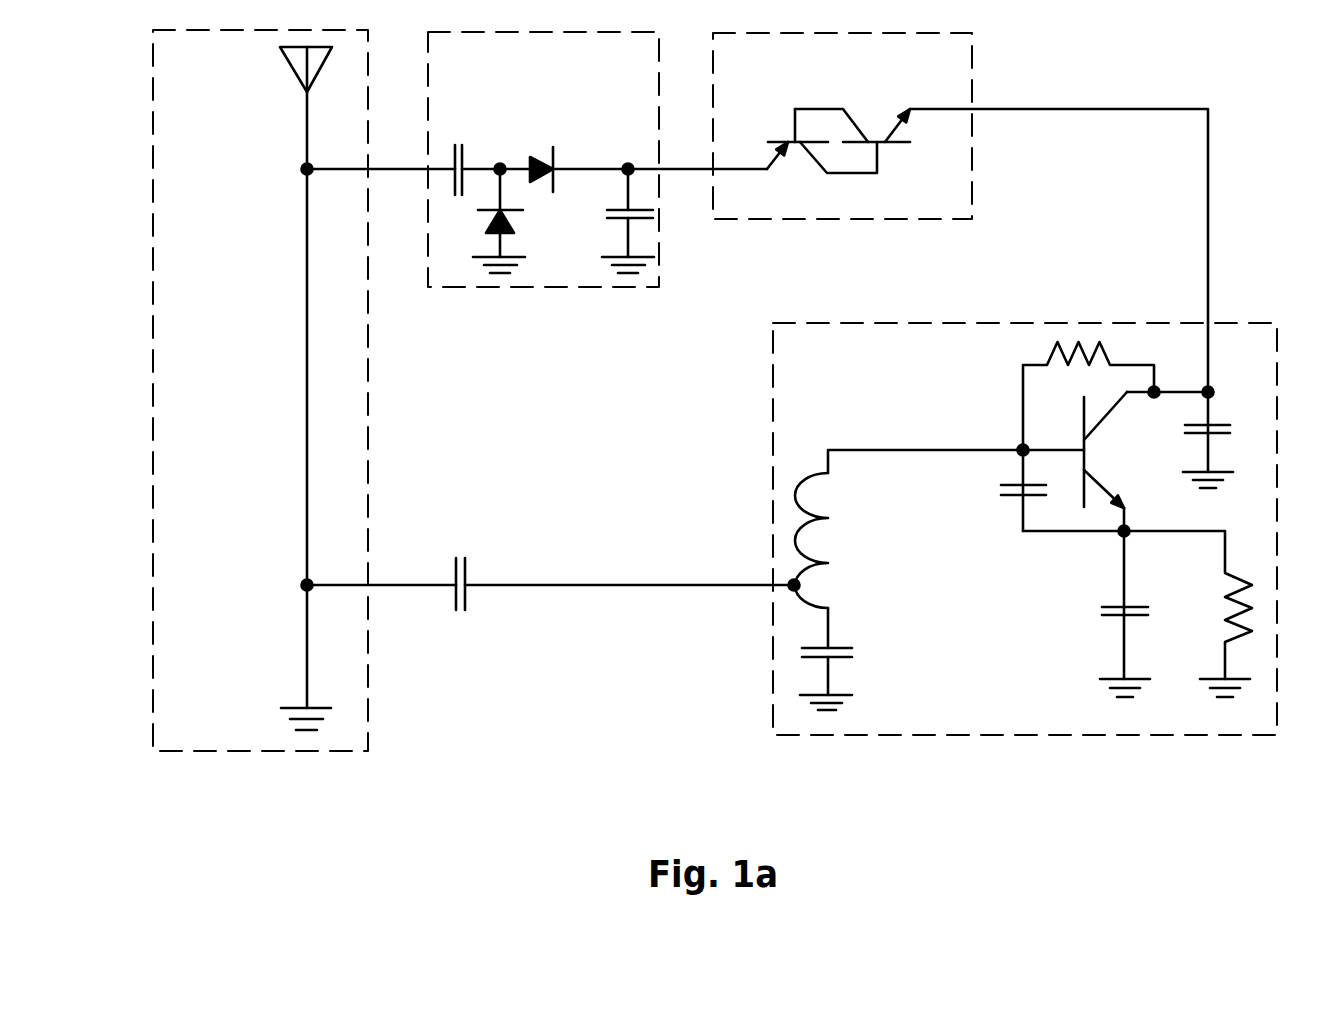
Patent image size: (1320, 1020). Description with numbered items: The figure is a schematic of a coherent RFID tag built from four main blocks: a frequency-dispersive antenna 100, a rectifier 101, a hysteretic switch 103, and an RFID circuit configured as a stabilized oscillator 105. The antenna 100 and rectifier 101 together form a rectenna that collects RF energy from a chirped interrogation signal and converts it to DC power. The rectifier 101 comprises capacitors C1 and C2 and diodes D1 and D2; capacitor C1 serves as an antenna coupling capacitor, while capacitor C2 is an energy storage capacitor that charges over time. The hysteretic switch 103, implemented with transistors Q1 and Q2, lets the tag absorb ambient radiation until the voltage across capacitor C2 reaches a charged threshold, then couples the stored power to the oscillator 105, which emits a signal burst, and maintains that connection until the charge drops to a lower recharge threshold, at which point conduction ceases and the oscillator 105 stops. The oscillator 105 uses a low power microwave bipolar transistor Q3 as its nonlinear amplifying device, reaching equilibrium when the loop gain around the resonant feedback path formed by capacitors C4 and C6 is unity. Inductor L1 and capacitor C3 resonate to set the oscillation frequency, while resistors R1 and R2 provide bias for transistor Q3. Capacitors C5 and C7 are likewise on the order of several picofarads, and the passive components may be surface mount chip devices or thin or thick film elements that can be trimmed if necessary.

The frequency-dispersive antenna 100 is at (209, 431).
The rectifier 101 is at (523, 87).
The hysteretic switch 103 is at (822, 87).
The stabilized oscillator 105 is at (867, 383).
The antenna coupling capacitor C1 is at (477, 165).
The energy storage capacitor C2 is at (619, 221).
The capacitor C3 is at (847, 659).
The capacitor C4 is at (1047, 490).
The capacitor C5 is at (1223, 440).
The capacitor C6 is at (1109, 614).
The capacitor C7 is at (550, 604).
The diode D1 is at (564, 164).
The diode D2 is at (489, 221).
The inductor L1 is at (909, 529).
The resistor R1 is at (1088, 396).
The resistor R2 is at (1188, 614).
The transistor Q1 is at (822, 147).
The transistor Q2 is at (852, 125).
The low power microwave bipolar transistor Q3 is at (1075, 461).